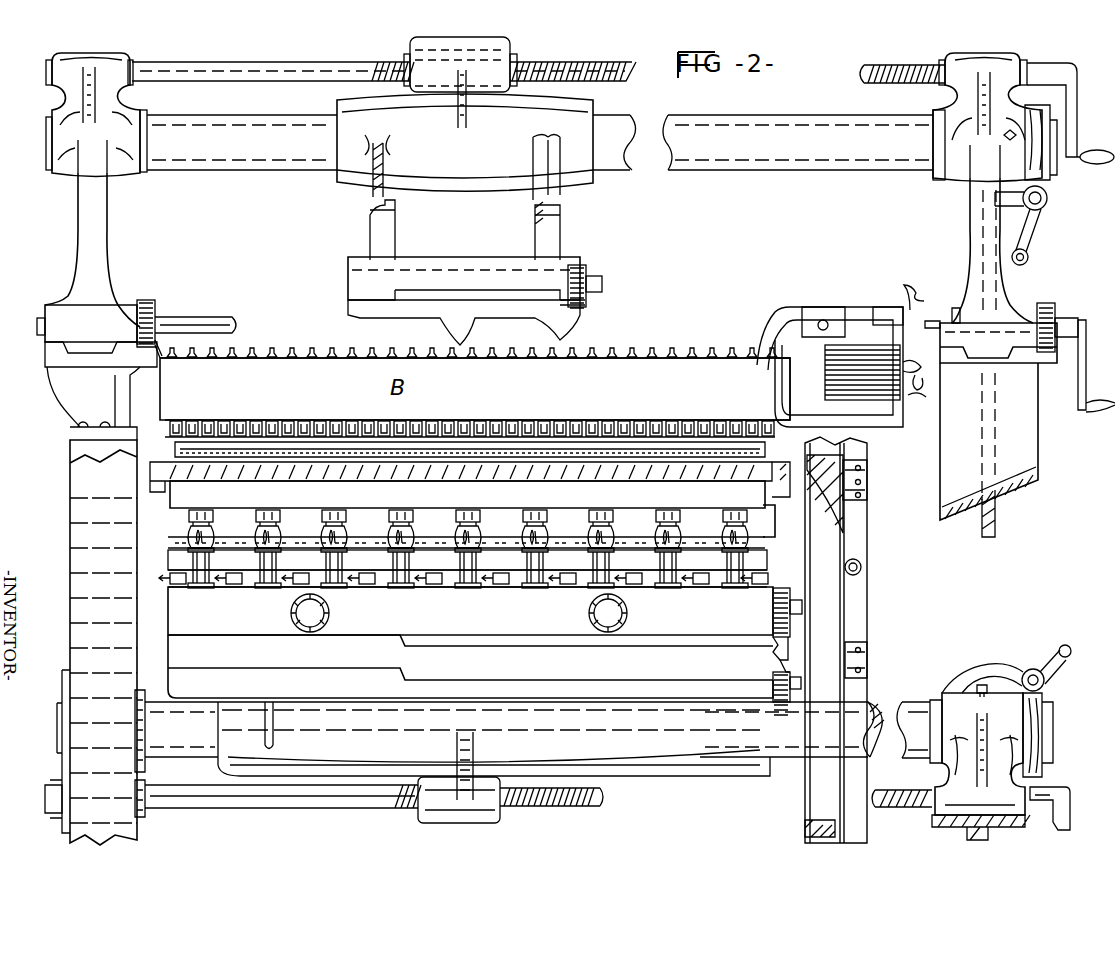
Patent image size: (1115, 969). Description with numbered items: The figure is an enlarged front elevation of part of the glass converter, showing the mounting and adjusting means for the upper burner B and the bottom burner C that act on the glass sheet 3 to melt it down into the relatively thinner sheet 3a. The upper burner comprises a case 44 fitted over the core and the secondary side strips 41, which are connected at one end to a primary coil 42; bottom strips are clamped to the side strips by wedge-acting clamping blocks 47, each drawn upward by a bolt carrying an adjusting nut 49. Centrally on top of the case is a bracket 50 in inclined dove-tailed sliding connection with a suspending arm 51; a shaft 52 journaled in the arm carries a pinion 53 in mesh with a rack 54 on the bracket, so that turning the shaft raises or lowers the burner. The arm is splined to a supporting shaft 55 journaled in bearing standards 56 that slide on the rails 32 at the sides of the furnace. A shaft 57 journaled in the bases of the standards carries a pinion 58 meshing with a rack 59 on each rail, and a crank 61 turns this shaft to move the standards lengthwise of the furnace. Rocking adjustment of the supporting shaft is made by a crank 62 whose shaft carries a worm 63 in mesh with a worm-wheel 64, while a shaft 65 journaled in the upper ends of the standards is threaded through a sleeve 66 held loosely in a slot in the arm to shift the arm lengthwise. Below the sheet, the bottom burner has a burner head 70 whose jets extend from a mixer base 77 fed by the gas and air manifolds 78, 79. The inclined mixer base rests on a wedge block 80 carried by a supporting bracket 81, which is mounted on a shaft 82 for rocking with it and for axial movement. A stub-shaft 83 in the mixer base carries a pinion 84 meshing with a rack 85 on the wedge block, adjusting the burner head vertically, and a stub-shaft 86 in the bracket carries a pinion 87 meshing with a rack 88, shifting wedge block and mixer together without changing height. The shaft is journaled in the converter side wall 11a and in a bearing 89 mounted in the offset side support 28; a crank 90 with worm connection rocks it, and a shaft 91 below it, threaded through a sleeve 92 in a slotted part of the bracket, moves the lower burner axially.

The glass sheet 3 is at (316, 440).
The relatively thinner sheet 3a is at (420, 445).
The side wall of the converter compartment 11a is at (92, 536).
The support 28 is at (946, 480).
The rails 32 is at (52, 358).
The side strips 41 is at (789, 389).
The primary coil 42 is at (912, 362).
The case 44 is at (475, 389).
The clamping blocks 47 is at (630, 425).
The adjusting nut 49 is at (660, 350).
The bracket 50 is at (540, 336).
The suspending arm 51 is at (545, 250).
The shaft 52 is at (600, 282).
The pinion 53 is at (580, 270).
The rack 54 is at (586, 305).
The supporting shaft 55 is at (742, 158).
The bearing standards 56 is at (82, 218).
The shaft 57 is at (208, 318).
The pinion 58 is at (150, 300).
The rack 59 is at (160, 355).
The crank 61 is at (1080, 392).
The crank 62 is at (1028, 232).
The worm 63 is at (1048, 202).
The worm-wheel 64 is at (1040, 170).
The shaft 65 is at (600, 70).
The sleeve 66 is at (510, 65).
The burner head 70 is at (472, 507).
The mixer base 77 is at (470, 611).
The gas manifold 78 is at (330, 612).
The air manifold 79 is at (628, 612).
The wedge block 80 is at (470, 657).
The supporting bracket 81 is at (470, 683).
The shaft 82 is at (762, 748).
The stub-shaft 83 is at (795, 598).
The pinion 84 is at (772, 606).
The rack 85 is at (768, 642).
The stub-shaft 86 is at (800, 682).
The pinion 87 is at (768, 688).
The rack 88 is at (790, 658).
The bearing 89 is at (971, 757).
The crank 90 is at (1048, 665).
The shaft 91 is at (338, 800).
The sleeve 92 is at (508, 808).